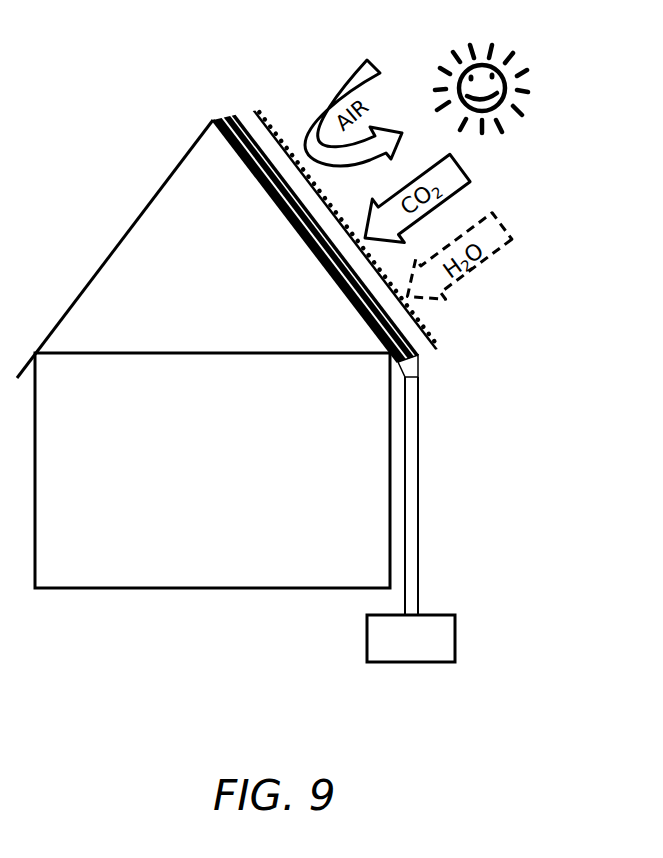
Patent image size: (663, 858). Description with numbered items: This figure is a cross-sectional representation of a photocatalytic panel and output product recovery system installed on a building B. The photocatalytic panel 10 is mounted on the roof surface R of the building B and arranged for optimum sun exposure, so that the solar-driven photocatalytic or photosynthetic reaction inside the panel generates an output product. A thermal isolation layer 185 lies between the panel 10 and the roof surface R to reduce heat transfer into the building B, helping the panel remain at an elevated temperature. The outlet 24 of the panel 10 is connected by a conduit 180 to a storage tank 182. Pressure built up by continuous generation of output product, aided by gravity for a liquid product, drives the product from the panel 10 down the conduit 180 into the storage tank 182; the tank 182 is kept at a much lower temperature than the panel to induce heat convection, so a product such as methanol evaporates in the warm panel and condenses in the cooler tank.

The photocatalytic panel 10 is at (289, 248).
The thermal isolation layer 185 is at (240, 153).
The outlet 24 is at (418, 370).
The conduit 180 is at (420, 525).
The storage tank 182 is at (458, 635).
The roof surface R is at (213, 120).
The building B is at (222, 482).